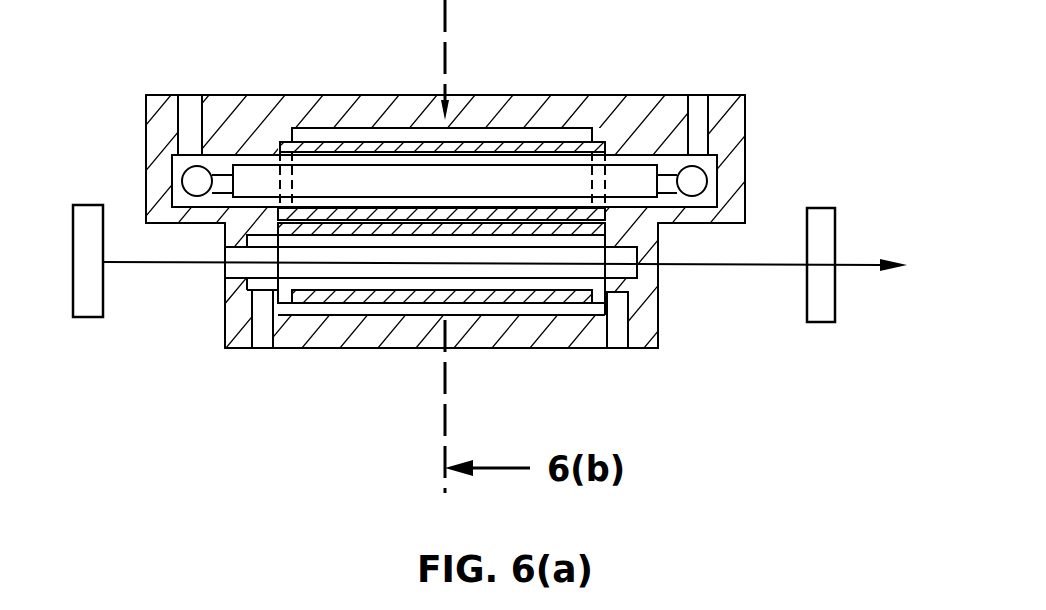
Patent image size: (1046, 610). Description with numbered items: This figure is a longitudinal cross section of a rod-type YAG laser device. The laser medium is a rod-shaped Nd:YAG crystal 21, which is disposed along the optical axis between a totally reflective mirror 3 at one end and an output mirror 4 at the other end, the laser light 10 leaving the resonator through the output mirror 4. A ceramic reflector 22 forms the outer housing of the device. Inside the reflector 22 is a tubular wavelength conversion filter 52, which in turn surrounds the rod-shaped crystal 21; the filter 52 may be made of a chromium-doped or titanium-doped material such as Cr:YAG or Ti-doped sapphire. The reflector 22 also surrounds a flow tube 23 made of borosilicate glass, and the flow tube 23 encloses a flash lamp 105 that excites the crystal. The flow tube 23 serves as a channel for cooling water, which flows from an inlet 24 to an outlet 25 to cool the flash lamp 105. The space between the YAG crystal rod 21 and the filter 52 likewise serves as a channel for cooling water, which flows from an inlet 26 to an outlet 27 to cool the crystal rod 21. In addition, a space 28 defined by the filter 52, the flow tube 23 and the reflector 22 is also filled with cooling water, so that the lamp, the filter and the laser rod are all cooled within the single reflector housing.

The totally reflective mirror 3 is at (90, 308).
The output mirror 4 is at (820, 310).
The laser beam 10 is at (855, 265).
The rod-shaped Nd:YAG crystal 21 is at (653, 283).
The reflector 22 is at (480, 107).
The flow tube 23 is at (530, 147).
The inlet 24 is at (697, 110).
The outlet 25 is at (190, 105).
The inlet 26 is at (262, 335).
The outlet 27 is at (618, 340).
The space 28 is at (345, 145).
The tubular wavelength conversion filter 52 is at (345, 297).
The flash lamp 105 is at (622, 178).